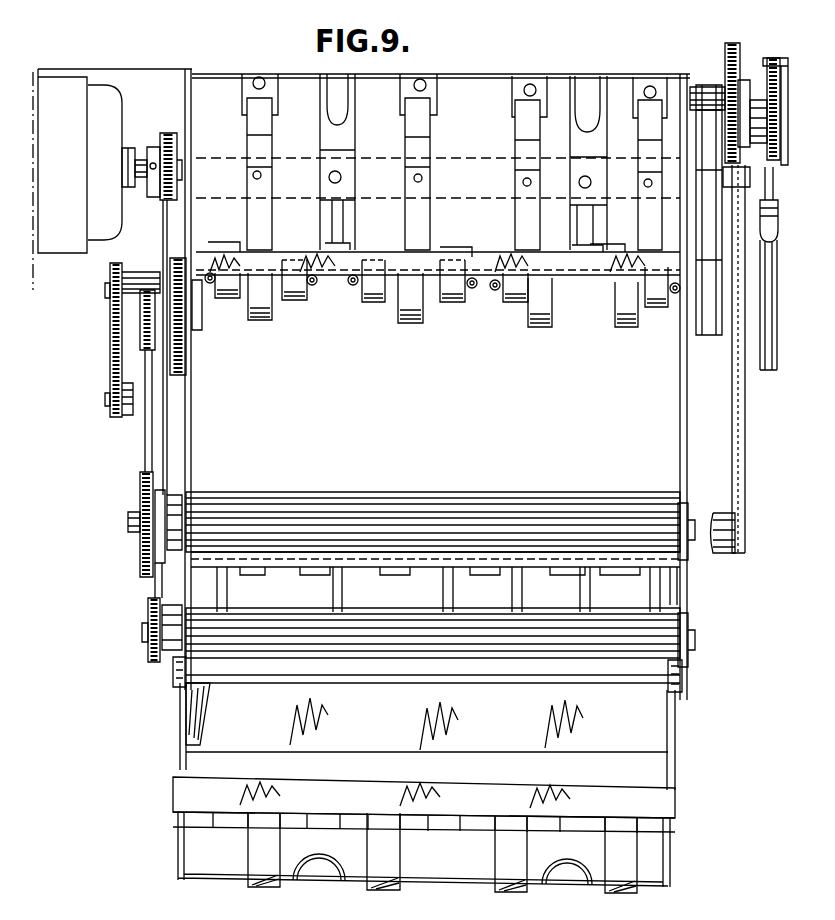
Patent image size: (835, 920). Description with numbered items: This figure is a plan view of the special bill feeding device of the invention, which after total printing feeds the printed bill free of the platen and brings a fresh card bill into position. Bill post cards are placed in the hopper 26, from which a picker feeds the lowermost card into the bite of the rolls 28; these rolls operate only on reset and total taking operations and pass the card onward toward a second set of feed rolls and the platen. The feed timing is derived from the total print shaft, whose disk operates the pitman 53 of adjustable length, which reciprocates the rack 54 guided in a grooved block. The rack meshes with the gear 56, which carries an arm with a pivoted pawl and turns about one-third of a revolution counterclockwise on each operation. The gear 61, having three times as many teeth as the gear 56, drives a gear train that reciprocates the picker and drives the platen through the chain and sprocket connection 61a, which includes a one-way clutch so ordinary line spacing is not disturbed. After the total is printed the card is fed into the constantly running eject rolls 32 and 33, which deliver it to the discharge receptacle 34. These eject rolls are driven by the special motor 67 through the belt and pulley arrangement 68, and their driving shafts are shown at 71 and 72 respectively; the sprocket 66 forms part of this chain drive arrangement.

The hopper 26 is at (528, 112).
The rolls 28 is at (459, 302).
The eject roll 32 is at (432, 514).
The eject roll 33 is at (376, 625).
The discharge receptacle 34 is at (427, 723).
The pitman 53 is at (766, 368).
The rack 54 is at (774, 58).
The gear 56 is at (762, 95).
The gear 61 is at (725, 57).
The chain and sprocket connection 61a is at (743, 461).
The sprocket 66 is at (110, 332).
The motor 67 is at (118, 101).
The belt and pulley arrangement 68 is at (167, 219).
The driving shaft 71 is at (128, 521).
The driving shaft 72 is at (146, 643).